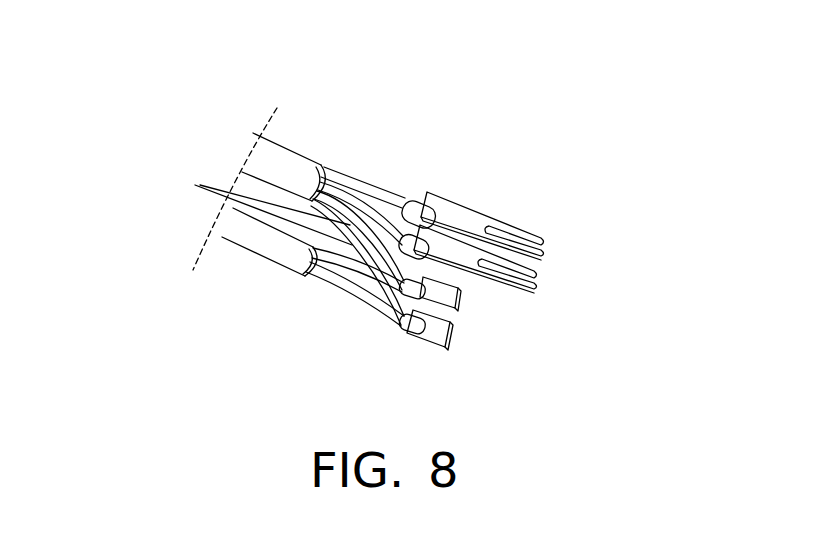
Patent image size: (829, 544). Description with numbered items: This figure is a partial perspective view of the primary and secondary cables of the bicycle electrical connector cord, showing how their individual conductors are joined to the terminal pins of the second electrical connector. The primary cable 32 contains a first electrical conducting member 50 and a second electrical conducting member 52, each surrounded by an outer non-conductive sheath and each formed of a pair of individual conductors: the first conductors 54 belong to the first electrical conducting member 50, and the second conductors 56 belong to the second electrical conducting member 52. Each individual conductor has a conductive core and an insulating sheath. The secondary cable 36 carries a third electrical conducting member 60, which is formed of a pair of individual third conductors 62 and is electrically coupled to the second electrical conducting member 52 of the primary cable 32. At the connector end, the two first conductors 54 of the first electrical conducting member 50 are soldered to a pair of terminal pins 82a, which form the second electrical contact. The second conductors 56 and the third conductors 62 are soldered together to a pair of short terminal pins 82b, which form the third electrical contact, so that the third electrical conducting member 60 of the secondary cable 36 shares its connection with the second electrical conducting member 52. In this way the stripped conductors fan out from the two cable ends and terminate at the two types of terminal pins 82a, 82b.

The primary cable 32 is at (299, 146).
The secondary cable 36 is at (250, 264).
The first electrical conducting member 50 is at (384, 180).
The second electrical conducting member 52 is at (373, 301).
The first conductors 54 is at (390, 224).
The second conductors 56 is at (200, 185).
The third electrical conducting member 60 is at (315, 287).
The third conductors 62 is at (360, 294).
The terminal pins 82a is at (533, 271).
The short terminal pins 82b is at (460, 298).